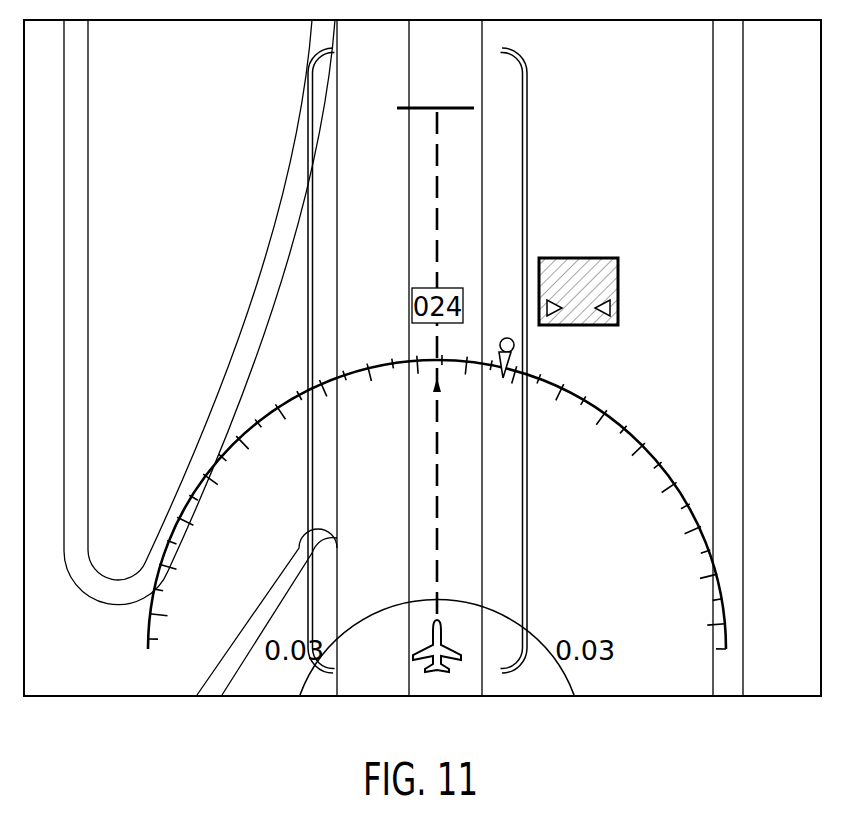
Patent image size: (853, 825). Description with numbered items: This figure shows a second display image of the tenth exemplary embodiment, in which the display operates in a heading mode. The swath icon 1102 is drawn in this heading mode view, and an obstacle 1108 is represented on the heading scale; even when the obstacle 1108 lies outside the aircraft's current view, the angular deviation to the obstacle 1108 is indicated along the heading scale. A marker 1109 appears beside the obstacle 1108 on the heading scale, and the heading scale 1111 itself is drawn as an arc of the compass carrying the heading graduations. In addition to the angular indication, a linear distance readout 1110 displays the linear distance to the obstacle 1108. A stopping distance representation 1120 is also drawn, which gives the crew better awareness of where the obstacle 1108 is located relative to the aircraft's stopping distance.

The swath icon 1102 is at (308, 240).
The obstacle 1108 is at (514, 343).
The heading pointer 1109 is at (505, 384).
The linear distance readout 1110 is at (598, 258).
The compass rose 1111 is at (655, 454).
The stopping distance representation 1120 is at (447, 108).